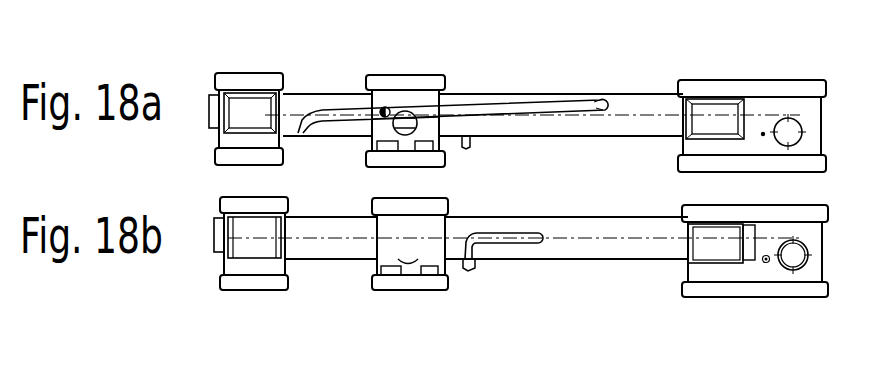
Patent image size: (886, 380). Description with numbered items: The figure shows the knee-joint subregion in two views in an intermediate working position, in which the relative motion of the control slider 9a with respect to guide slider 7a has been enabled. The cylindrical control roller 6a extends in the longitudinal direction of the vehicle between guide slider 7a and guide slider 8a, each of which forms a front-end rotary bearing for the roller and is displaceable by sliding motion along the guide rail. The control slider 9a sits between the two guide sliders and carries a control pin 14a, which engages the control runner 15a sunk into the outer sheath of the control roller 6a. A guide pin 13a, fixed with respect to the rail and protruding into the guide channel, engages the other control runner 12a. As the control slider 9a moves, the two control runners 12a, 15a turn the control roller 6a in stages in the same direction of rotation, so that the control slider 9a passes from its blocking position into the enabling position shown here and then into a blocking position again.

In FIG. 18A, the control roller 6a is at (573, 95).
In FIG. 18B, the control roller 6a is at (630, 260).
In FIG. 18A, the guide slider 7a is at (240, 73).
In FIG. 18B, the guide slider 7a is at (251, 243).
In FIG. 18A, the guide slider 8a is at (747, 80).
In FIG. 18B, the guide slider 8a is at (690, 205).
In FIG. 18A, the control slider 9a is at (409, 75).
In FIG. 18B, the control slider 9a is at (424, 291).
In FIG. 18B, the control runner 12a is at (527, 245).
In FIG. 18A, the guide pin 13a is at (468, 150).
In FIG. 18B, the guide pin 13a is at (469, 272).
In FIG. 18A, the control pin 14a is at (380, 108).
In FIG. 18A, the control runner 15a is at (497, 108).